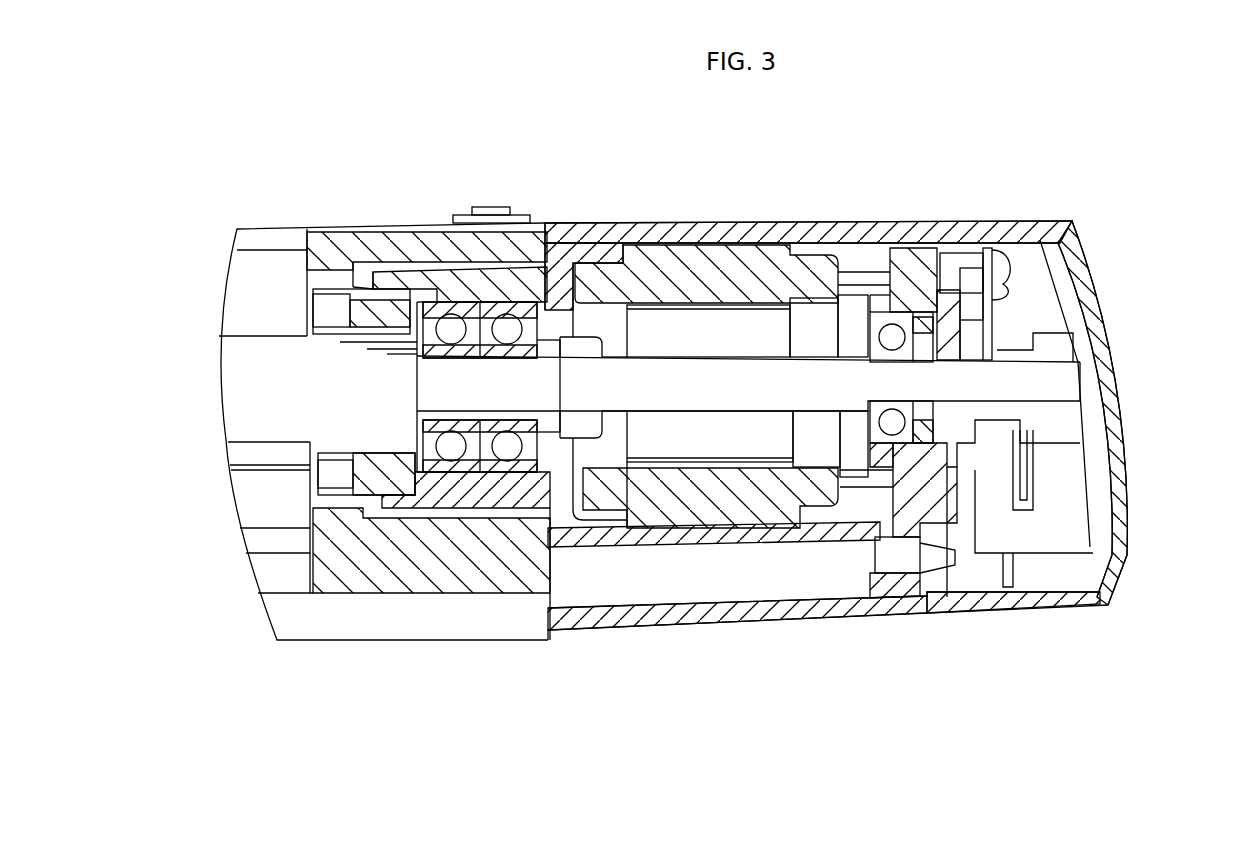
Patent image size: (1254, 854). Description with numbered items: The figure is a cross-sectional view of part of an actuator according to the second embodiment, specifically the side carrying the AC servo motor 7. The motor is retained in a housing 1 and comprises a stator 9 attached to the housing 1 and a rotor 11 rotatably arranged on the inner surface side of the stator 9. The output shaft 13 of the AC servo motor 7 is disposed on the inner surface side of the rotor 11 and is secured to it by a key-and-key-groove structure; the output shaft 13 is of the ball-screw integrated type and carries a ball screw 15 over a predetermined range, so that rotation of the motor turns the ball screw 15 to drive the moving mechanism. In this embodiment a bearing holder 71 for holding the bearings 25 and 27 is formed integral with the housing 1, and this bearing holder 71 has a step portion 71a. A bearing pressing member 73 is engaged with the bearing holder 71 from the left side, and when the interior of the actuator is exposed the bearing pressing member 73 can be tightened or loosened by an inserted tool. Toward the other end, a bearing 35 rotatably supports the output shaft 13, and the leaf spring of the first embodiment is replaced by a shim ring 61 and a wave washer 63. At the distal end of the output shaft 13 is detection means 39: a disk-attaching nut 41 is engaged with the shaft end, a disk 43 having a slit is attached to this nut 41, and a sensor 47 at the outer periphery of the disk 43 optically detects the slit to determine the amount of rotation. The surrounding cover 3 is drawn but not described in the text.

The housing 1 is at (670, 618).
The rear cover 3 is at (1115, 418).
The AC servo motor 7 is at (823, 248).
The stator 9 is at (716, 260).
The rotor 11 is at (652, 447).
The output shaft 13 is at (742, 397).
The ball screw 15 is at (257, 430).
The bearing 25 is at (437, 474).
The bearing 27 is at (513, 474).
The bearing 35 is at (908, 492).
The detection means 39 is at (1027, 262).
The disk-attaching nut 41 is at (1042, 347).
The disk 43 is at (1020, 303).
The sensor 47 is at (1062, 548).
The shim ring 61 is at (897, 243).
The wave washer 63 is at (922, 350).
The bearing holder 71 is at (485, 496).
The step portion 71a is at (534, 474).
The bearing pressing member 73 is at (358, 284).